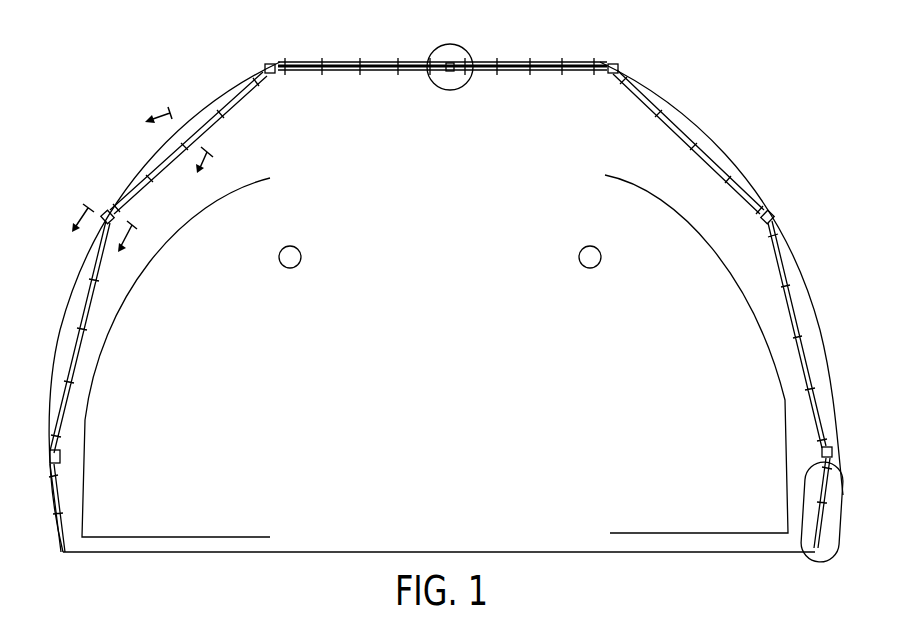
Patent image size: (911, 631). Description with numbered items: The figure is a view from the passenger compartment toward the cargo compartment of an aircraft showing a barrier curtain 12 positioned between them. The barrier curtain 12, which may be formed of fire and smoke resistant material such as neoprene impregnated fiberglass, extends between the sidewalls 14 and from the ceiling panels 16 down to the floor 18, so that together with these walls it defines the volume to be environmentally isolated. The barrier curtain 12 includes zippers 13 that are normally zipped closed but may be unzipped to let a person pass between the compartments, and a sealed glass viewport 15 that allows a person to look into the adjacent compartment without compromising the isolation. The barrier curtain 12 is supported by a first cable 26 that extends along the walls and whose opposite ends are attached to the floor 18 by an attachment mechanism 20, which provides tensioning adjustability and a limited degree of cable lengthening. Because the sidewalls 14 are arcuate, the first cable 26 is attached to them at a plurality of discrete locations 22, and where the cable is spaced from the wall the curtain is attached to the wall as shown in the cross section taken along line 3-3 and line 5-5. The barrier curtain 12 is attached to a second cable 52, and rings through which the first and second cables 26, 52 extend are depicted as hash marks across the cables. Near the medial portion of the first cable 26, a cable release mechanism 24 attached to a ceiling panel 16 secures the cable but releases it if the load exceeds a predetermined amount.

The section line 3- 3 is at (171, 152).
The section line 5- 5 is at (100, 241).
The barrier curtain 12 is at (622, 115).
The zippers 13 is at (85, 406).
The sidewalls 14 is at (53, 346).
The viewport 15 is at (290, 268).
The ceiling panels 16 is at (345, 60).
The floor 18 is at (610, 553).
The attachment mechanism 20 is at (815, 562).
The discrete locations 22 is at (270, 62).
The cable release mechanism 24 is at (463, 45).
The first cable 26 is at (207, 125).
The second cable 52 is at (205, 133).